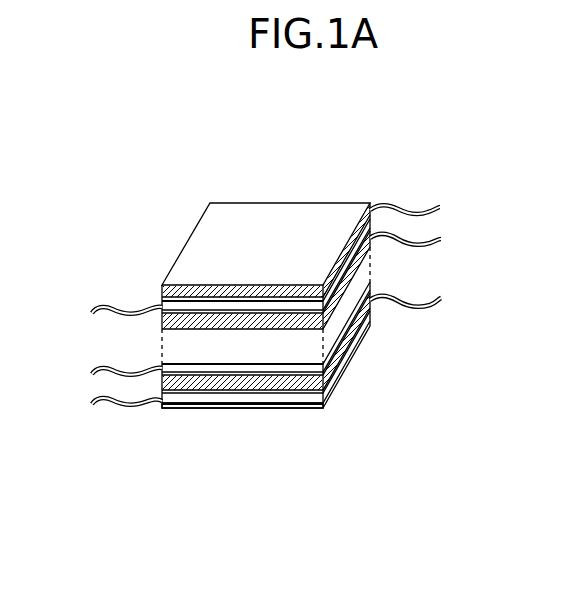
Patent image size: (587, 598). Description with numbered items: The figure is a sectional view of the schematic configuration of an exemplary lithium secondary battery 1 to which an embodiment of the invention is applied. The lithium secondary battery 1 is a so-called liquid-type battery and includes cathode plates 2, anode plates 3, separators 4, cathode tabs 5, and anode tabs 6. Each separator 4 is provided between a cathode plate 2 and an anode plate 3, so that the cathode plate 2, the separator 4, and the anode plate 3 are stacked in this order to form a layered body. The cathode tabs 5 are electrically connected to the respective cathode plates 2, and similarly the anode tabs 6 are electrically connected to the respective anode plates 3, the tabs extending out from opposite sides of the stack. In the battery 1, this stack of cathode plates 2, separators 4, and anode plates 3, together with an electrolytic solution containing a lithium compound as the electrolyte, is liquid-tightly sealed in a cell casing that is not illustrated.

The lithium secondary battery 1 is at (226, 194).
The cathode plate 2 is at (162, 297).
The anode plate 3 is at (228, 398).
The separator 4 is at (333, 390).
The cathode tab 5 is at (438, 243).
The anode tab 6 is at (102, 306).